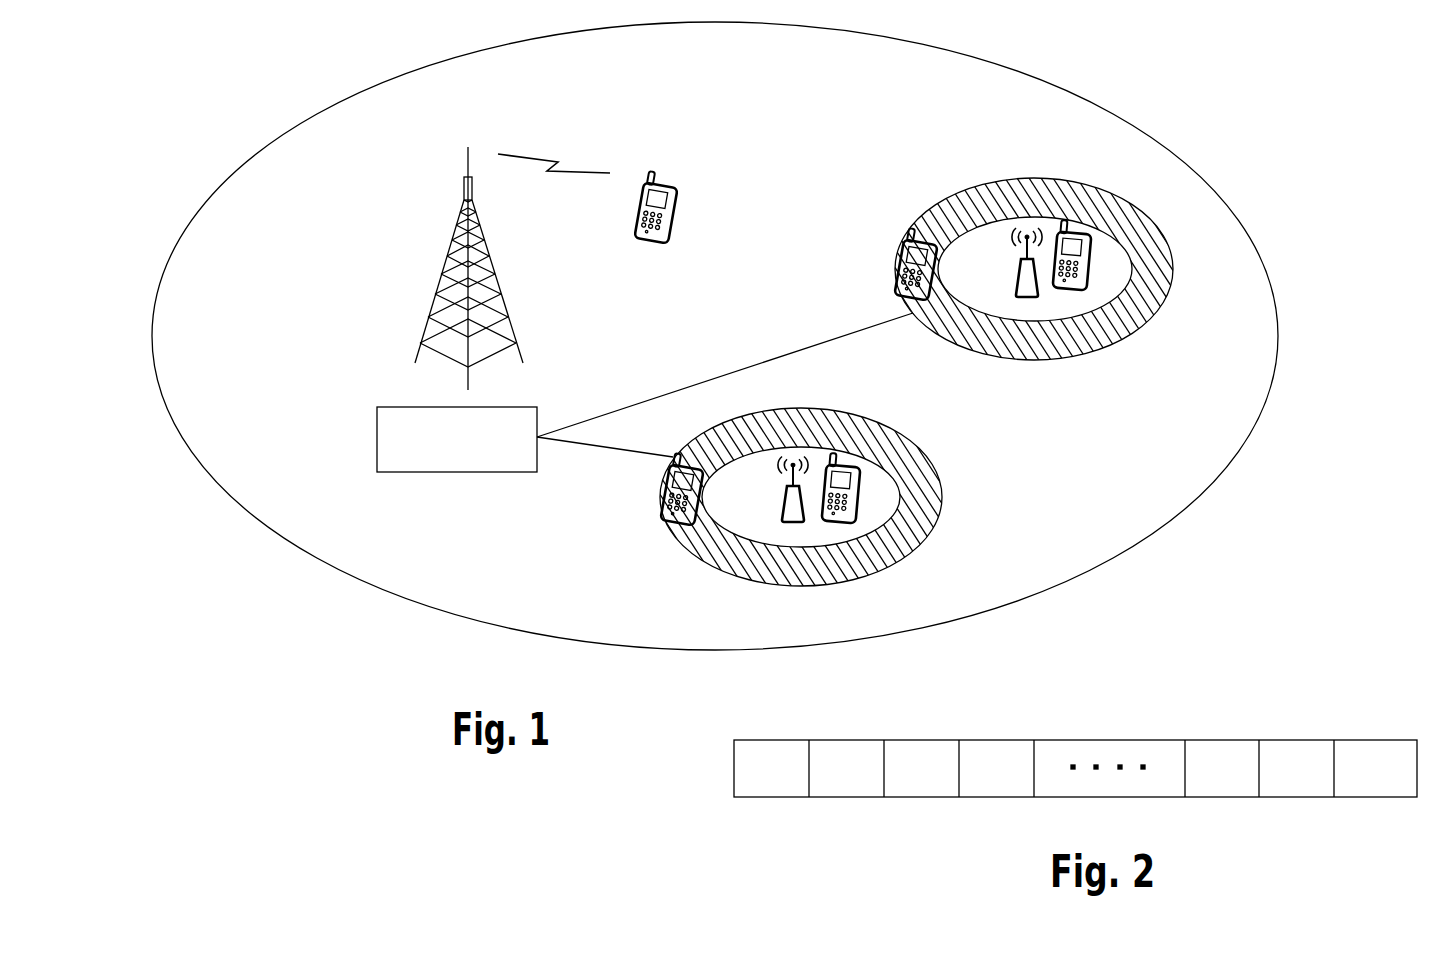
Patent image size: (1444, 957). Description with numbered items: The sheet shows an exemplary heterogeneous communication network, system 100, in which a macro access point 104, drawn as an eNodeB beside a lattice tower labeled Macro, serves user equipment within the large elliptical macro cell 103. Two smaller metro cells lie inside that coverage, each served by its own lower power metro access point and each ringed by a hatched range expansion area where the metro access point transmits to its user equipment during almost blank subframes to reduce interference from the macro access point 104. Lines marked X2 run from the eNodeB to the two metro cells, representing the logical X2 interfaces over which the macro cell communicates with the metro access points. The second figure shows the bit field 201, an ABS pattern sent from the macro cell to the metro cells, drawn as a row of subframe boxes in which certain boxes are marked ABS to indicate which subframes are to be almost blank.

In FIG. 1, the system 100 is at (1238, 146).
In FIG. 1, the macro cell 103 is at (1205, 493).
In FIG. 1, the macro access point 104 is at (395, 362).
In FIG. 2, the bit field 201 is at (1080, 740).